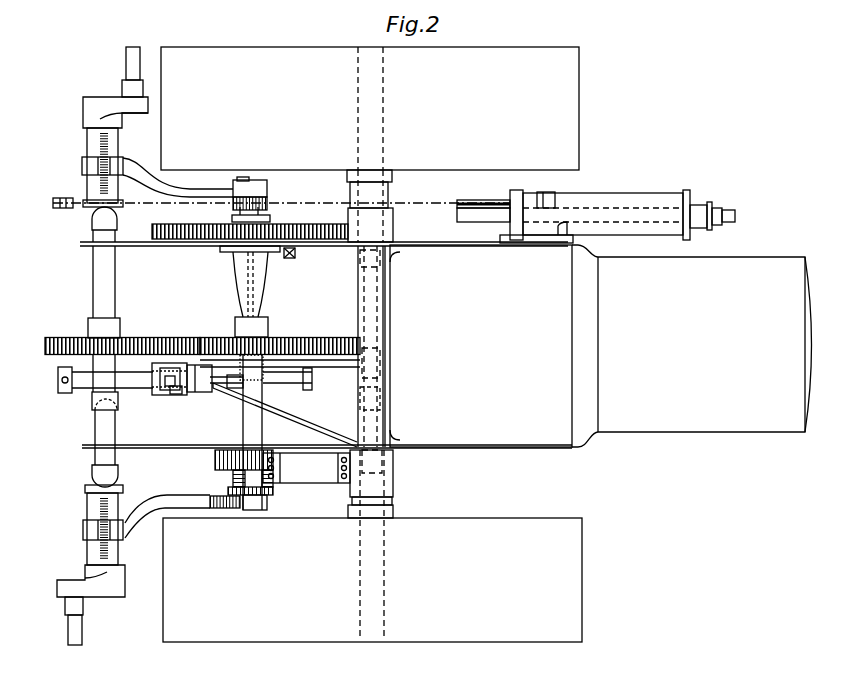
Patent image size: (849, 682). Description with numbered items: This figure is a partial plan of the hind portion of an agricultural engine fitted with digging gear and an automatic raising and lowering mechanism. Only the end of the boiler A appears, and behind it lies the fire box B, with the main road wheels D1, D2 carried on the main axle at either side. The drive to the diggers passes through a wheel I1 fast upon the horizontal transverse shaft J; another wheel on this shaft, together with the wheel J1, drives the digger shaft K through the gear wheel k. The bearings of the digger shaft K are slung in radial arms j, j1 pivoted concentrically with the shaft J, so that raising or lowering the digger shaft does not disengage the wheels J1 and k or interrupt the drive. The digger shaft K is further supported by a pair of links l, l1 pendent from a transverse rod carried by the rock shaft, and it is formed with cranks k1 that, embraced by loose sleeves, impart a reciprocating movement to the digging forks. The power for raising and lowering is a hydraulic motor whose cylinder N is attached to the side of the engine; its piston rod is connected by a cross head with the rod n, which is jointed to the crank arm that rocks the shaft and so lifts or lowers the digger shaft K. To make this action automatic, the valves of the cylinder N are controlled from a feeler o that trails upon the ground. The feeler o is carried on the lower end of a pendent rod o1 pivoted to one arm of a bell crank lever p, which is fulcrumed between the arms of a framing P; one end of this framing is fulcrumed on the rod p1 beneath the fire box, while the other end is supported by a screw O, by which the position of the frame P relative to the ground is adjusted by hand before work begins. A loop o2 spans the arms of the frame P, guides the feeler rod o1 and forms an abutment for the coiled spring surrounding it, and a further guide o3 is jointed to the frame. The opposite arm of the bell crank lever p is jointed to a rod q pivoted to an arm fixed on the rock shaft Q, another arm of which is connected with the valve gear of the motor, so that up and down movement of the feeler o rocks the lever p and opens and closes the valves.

The boiler A is at (692, 346).
The fire box B is at (478, 346).
The main road wheel D1 is at (372, 580).
The main road wheel D2 is at (370, 108).
The wheel I1 is at (152, 233).
The horizontal transverse shaft J is at (282, 378).
The wheel J1 is at (182, 338).
The digger shaft K is at (118, 292).
The hydraulic motor cylinder N is at (612, 200).
The screw O is at (58, 380).
The framing P is at (300, 418).
The rock shaft Q is at (372, 300).
The radial arm j is at (178, 500).
The radial arm j1 is at (225, 190).
The wheel k is at (122, 336).
The crank k1 is at (126, 86).
The link l is at (100, 507).
The link l1 is at (100, 145).
The rod n is at (472, 200).
The feeler o is at (169, 379).
The pendent rod o1 is at (165, 386).
The loop o2 is at (175, 394).
The bracket o3 is at (295, 383).
The bell crank lever p is at (197, 392).
The rod p1 is at (375, 423).
The rod q is at (305, 360).